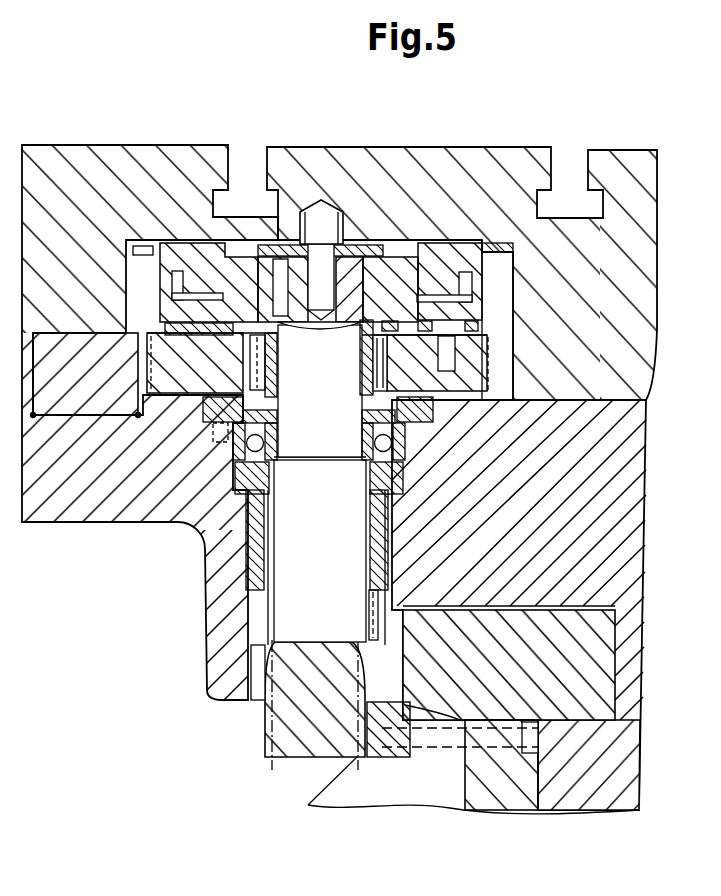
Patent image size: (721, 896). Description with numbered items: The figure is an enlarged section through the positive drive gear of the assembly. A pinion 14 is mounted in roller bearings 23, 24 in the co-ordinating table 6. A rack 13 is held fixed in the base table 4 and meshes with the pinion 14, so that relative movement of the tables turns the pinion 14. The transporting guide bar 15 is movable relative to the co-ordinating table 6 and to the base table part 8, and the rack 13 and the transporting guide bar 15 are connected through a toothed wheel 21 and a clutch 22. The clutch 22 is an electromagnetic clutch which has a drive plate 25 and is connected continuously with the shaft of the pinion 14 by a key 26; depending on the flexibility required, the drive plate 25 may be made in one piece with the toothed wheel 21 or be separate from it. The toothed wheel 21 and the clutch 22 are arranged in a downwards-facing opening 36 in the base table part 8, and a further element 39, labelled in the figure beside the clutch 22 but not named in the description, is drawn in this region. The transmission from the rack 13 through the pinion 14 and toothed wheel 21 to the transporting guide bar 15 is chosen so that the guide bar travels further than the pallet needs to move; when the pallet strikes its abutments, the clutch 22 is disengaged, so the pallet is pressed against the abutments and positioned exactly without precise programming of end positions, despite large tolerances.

The base table 4 is at (550, 773).
The co-ordinating table 6 is at (217, 610).
The base table part 8 is at (593, 325).
The rack 13 is at (383, 758).
The pinion 14 is at (300, 730).
The transporting guide bar 15 is at (87, 385).
The toothed wheel 21 is at (180, 372).
The clutch 22 is at (218, 305).
The roller bearing 23 is at (384, 603).
The roller bearing 24 is at (412, 428).
The drive plate 25 is at (165, 330).
The key 26 is at (278, 278).
The downwards-facing opening 36 is at (497, 322).
The sealing ring 39 is at (160, 335).